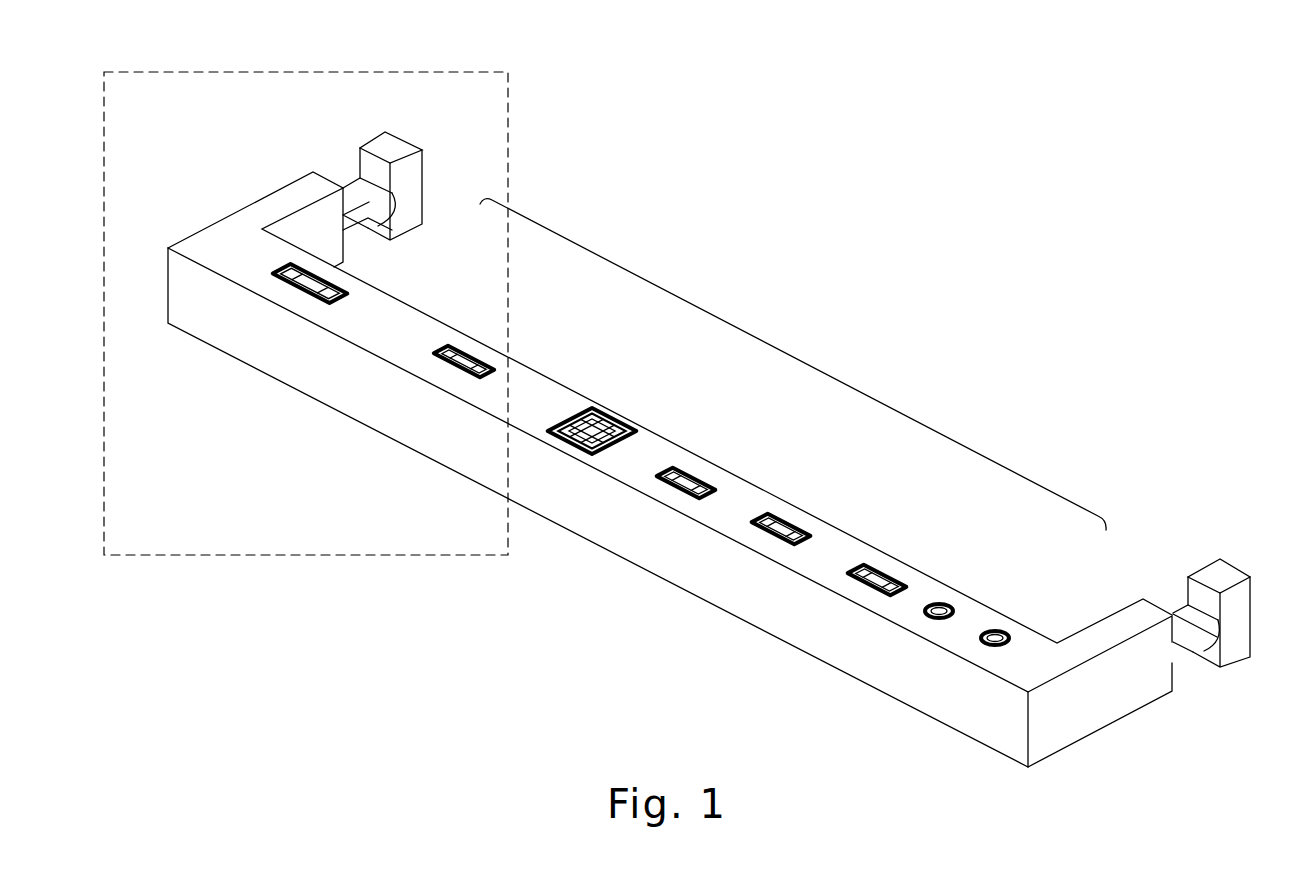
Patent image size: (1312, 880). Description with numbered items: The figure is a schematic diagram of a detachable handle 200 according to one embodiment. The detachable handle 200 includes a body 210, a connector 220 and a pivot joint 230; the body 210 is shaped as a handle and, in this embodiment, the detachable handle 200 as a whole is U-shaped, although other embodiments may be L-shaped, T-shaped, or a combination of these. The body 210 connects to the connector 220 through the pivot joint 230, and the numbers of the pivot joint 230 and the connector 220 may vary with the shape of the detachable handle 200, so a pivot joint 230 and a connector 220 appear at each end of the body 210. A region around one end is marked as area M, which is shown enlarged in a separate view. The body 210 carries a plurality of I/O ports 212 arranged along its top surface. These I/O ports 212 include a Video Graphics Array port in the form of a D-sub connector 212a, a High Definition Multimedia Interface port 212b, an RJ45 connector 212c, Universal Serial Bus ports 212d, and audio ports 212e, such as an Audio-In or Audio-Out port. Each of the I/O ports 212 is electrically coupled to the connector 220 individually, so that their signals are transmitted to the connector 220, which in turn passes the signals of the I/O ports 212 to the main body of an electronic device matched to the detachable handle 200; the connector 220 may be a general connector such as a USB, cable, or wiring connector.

The detachable handle 200 is at (720, 169).
The area M is at (509, 140).
The body 210 is at (228, 231).
The connector 220 is at (392, 141).
The pivot joint 230 is at (357, 177).
The I/O ports 212 is at (806, 358).
The D-sub connector 212a is at (348, 293).
The HDMI port 212b is at (468, 357).
The RJ45 connector 212c is at (600, 425).
The USB port 212d is at (688, 476).
The audio ports 212e is at (939, 606).